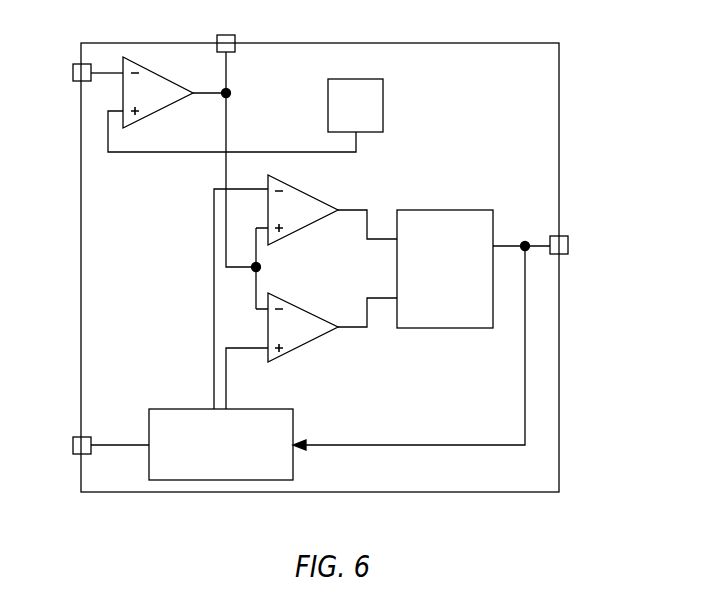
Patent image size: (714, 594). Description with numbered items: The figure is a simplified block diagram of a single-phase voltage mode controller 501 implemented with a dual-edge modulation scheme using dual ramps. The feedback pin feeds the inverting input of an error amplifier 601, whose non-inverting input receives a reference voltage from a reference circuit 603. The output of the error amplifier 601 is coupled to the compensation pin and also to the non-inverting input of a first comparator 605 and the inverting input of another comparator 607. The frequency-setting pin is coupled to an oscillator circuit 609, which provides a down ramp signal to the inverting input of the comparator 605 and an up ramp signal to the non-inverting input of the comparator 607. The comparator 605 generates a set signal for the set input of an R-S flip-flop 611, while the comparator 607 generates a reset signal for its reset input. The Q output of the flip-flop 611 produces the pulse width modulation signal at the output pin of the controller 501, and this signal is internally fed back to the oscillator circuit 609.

The single-phase voltage mode controller 501 is at (536, 79).
The error amplifier 601 is at (159, 64).
The reference circuit 603 is at (383, 107).
The first comparator 605 is at (296, 187).
The second comparator 607 is at (300, 305).
The oscillator circuit 609 is at (293, 429).
The R-S flip-flop 611 is at (493, 222).